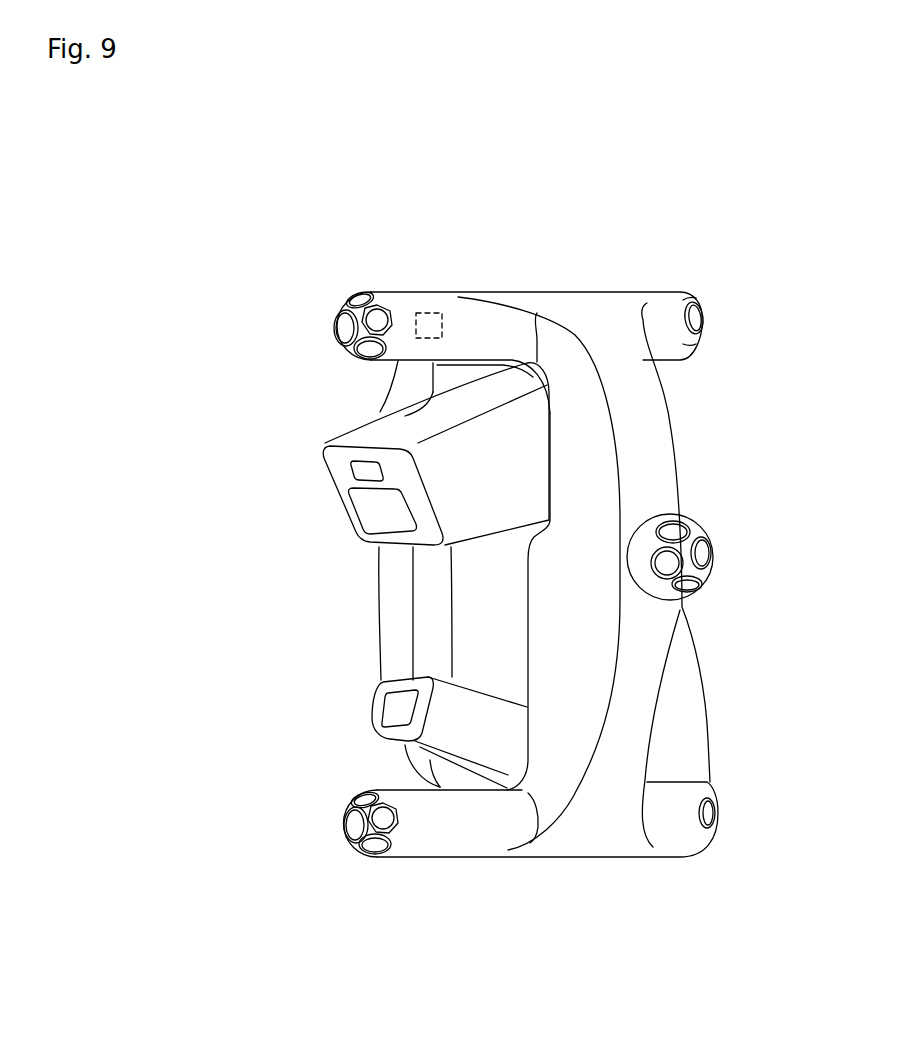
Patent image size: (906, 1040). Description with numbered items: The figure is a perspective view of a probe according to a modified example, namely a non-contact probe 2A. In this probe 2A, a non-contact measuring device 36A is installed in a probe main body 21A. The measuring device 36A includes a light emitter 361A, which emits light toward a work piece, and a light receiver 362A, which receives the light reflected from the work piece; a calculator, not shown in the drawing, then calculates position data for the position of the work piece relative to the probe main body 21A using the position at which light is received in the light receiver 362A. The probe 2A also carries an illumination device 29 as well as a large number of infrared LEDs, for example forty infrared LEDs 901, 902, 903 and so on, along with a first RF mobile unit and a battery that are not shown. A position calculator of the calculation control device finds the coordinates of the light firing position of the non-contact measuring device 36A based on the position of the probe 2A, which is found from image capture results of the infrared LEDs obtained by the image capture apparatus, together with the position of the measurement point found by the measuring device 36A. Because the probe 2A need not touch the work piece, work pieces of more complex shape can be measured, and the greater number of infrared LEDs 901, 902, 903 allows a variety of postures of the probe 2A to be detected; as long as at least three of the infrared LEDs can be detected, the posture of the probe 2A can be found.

The non-contact probe 2A is at (311, 190).
The probe main body 21A is at (650, 693).
The illumination device 29 is at (424, 312).
The non-contact measuring device 36A is at (253, 565).
The light emitter 361A is at (392, 708).
The light receiver 362A is at (380, 505).
The infrared LED 901 is at (368, 352).
The infrared LED 902 is at (377, 318).
The infrared LED 903 is at (345, 328).